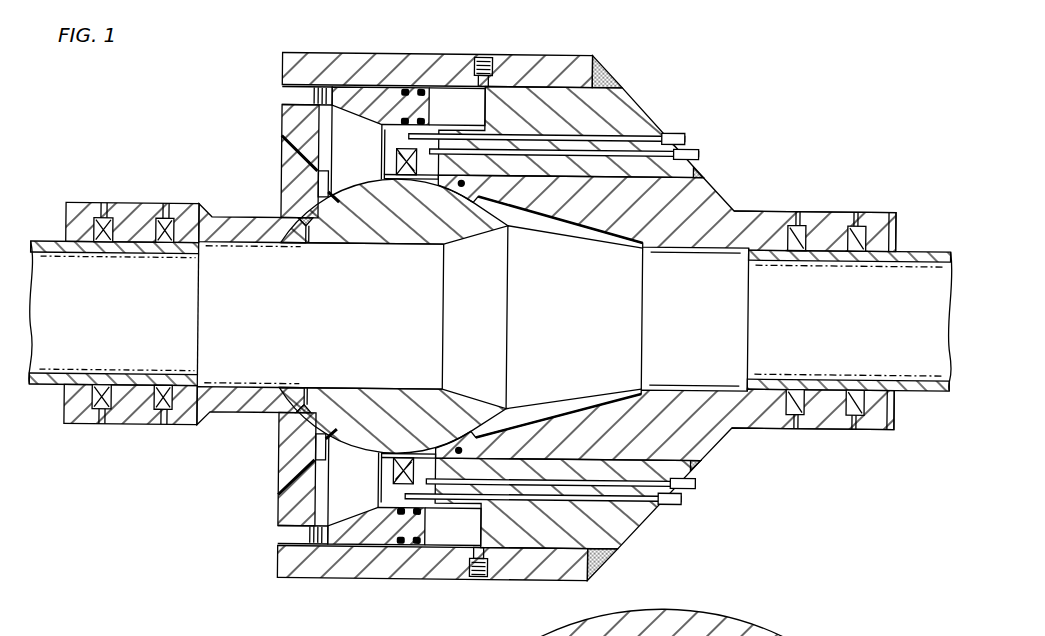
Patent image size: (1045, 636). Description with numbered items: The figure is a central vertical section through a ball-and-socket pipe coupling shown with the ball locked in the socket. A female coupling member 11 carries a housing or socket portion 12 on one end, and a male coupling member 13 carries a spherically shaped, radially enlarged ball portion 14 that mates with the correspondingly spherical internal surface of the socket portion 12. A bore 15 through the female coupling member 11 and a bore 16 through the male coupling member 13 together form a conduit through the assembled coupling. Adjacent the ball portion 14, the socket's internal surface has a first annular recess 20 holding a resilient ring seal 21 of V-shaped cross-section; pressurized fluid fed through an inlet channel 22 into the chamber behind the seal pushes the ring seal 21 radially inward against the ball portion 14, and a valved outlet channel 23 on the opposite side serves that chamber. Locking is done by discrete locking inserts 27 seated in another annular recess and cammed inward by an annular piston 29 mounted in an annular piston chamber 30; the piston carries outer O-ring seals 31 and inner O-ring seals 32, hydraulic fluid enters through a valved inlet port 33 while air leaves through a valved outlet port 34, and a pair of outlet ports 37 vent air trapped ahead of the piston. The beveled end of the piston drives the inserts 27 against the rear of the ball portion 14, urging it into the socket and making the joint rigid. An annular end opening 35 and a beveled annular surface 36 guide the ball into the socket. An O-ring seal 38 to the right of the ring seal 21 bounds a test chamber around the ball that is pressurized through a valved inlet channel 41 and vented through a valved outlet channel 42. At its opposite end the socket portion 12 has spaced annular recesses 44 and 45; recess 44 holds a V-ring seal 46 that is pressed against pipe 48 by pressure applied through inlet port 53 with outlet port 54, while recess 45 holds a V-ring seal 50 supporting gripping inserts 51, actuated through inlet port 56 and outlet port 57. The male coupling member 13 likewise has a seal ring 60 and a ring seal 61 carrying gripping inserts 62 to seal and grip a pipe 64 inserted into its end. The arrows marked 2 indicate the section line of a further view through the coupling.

The section line 2- 2 is at (355, 30).
The female coupling member 11 is at (753, 200).
The socket portion 12 is at (617, 98).
The male coupling member 13 is at (243, 215).
The ball portion 14 is at (430, 232).
The bore 15 is at (680, 260).
The bore 16 is at (252, 315).
The first annular recess 20 is at (402, 180).
The ring seal 21 is at (410, 180).
The inlet channel 22 is at (648, 131).
The outlet channel 23 is at (625, 510).
The locking inserts 27 is at (340, 128).
The annular piston 29 is at (362, 84).
The annular piston chamber 30 is at (452, 85).
The O-ring seals 31 is at (417, 86).
The O-ring seals 32 is at (368, 543).
The valved inlet port 33 is at (493, 58).
The valved outlet port 34 is at (479, 574).
The annular end opening 35 is at (322, 447).
The beveled annular surface 36 is at (300, 464).
The outlet ports 37 is at (292, 96).
The O-ring seal 38 is at (474, 198).
The valved inlet channel 41 is at (688, 136).
The valved outlet channel 42 is at (680, 500).
The annular recess 44 is at (813, 228).
The annular recess 45 is at (872, 238).
The annular V-ring seal 46 is at (796, 252).
The pipe 48 is at (931, 249).
The annular V-ring seal 50 is at (815, 260).
The gripping inserts 51 is at (858, 252).
The valved inlet port 53 is at (797, 218).
The outlet port 54 is at (797, 432).
The valved inlet port 56 is at (858, 216).
The outlet port 57 is at (853, 432).
The annular seal ring 60 is at (161, 386).
The annular ring seal 61 is at (96, 412).
The gripping inserts 62 is at (101, 386).
The pipe 64 is at (47, 240).